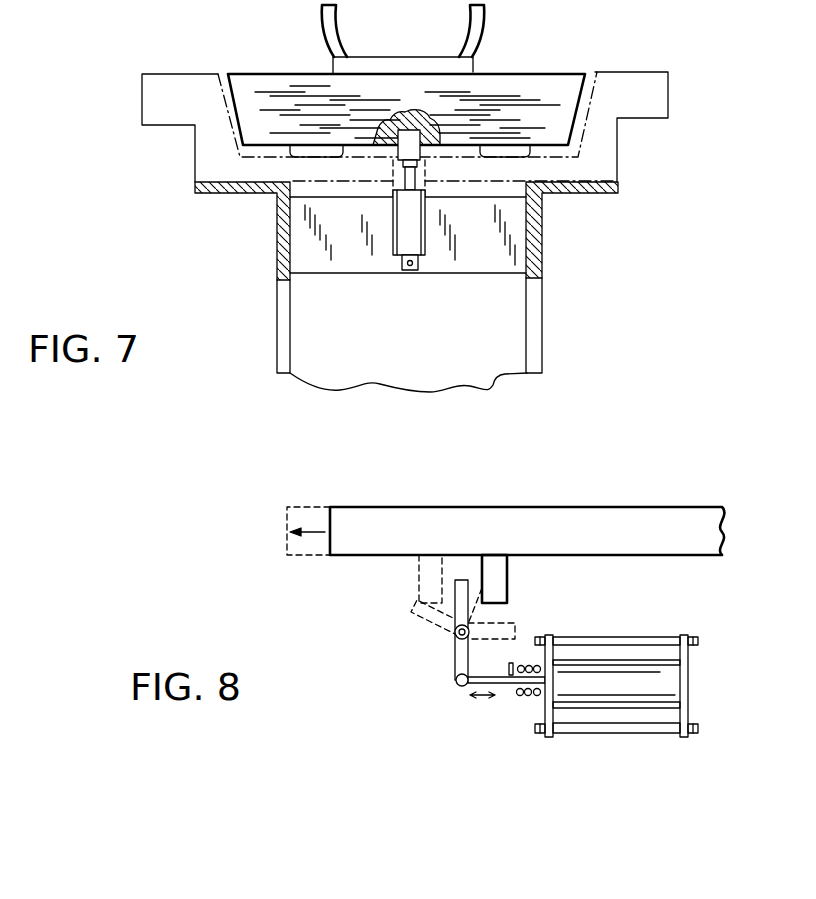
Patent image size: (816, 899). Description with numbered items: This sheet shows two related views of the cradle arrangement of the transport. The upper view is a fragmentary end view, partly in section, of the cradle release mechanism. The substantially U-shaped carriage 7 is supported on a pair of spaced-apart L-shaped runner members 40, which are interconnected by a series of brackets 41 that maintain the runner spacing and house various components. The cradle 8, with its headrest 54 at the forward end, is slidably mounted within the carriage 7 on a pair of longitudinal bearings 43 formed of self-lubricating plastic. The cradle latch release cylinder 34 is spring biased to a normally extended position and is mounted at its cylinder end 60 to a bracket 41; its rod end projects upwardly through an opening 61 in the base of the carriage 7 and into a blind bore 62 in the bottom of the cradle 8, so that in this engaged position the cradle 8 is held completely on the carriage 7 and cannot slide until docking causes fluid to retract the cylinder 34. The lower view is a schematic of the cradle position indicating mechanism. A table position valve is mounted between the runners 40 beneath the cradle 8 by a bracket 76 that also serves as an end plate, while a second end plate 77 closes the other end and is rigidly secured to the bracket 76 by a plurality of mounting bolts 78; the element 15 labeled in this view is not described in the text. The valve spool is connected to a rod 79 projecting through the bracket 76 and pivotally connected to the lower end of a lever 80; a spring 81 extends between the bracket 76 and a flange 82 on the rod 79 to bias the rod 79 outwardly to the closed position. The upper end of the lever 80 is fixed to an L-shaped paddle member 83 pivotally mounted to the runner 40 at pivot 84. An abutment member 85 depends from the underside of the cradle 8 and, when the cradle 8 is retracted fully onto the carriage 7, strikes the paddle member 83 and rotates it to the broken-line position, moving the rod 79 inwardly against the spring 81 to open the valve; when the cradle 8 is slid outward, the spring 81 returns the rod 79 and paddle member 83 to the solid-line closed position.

In FIG. 7, the carriage 7 is at (628, 72).
In FIG. 7, the cradle 8 is at (275, 73).
In FIG. 8, the cradle 8 is at (635, 505).
In FIG. 8, the guide rod 15 is at (657, 660).
In FIG. 7, the cradle latch release cylinder 34 is at (425, 248).
In FIG. 7, the runner members 40 is at (208, 193).
In FIG. 7, the brackets 41 is at (365, 257).
In FIG. 7, the longitudinal bearings 43 is at (350, 150).
In FIG. 7, the headrest 54 is at (485, 16).
In FIG. 7, the cylinder end 60 is at (410, 268).
In FIG. 7, the opening 61 is at (388, 170).
In FIG. 7, the blind bore 62 is at (402, 127).
In FIG. 8, the bracket 76 is at (550, 633).
In FIG. 8, the second end plate 77 is at (689, 682).
In FIG. 8, the mounting bolts 78 is at (628, 637).
In FIG. 8, the rod 79 is at (463, 686).
In FIG. 8, the lever 80 is at (458, 657).
In FIG. 8, the spring 81 is at (522, 697).
In FIG. 8, the flange 82 is at (512, 694).
In FIG. 8, the L-shaped paddle member 83 is at (455, 585).
In FIG. 8, the pivot 84 is at (455, 634).
In FIG. 8, the abutment member 85 is at (508, 577).